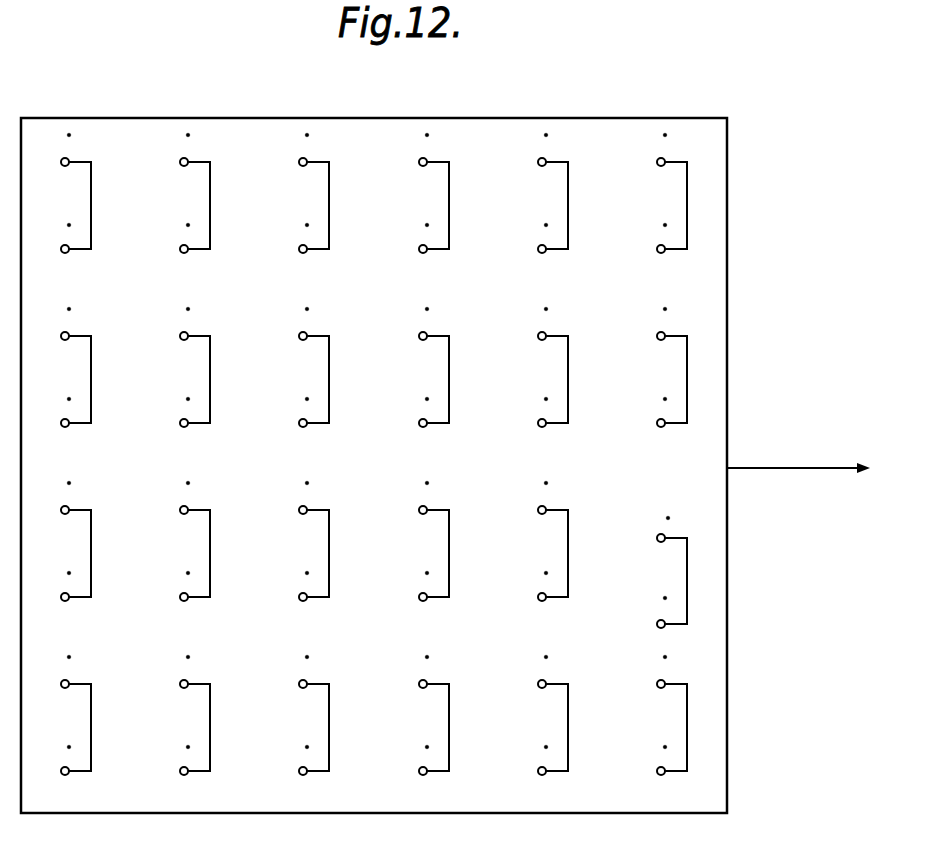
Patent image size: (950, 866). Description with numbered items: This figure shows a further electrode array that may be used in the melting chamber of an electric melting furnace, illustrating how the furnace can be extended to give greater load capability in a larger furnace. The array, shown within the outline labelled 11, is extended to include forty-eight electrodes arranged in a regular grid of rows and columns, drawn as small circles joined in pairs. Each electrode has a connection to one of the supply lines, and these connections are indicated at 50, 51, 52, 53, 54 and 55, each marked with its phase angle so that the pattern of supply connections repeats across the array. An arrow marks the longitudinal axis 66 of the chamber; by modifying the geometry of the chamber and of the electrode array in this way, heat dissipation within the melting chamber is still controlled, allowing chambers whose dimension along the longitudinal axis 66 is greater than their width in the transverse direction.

The sensor array plate 11 is at (539, 113).
The sensor element at 0 degrees 50 is at (102, 136).
The sensor element at 180 degrees 51 is at (460, 136).
The sensor element at 120 degrees 52 is at (579, 136).
The sensor element at 300 degrees 53 is at (221, 136).
The sensor element at 240 degrees 54 is at (340, 136).
The sensor element at 60 degrees 55 is at (698, 136).
The longitudinal axis 66 is at (750, 472).